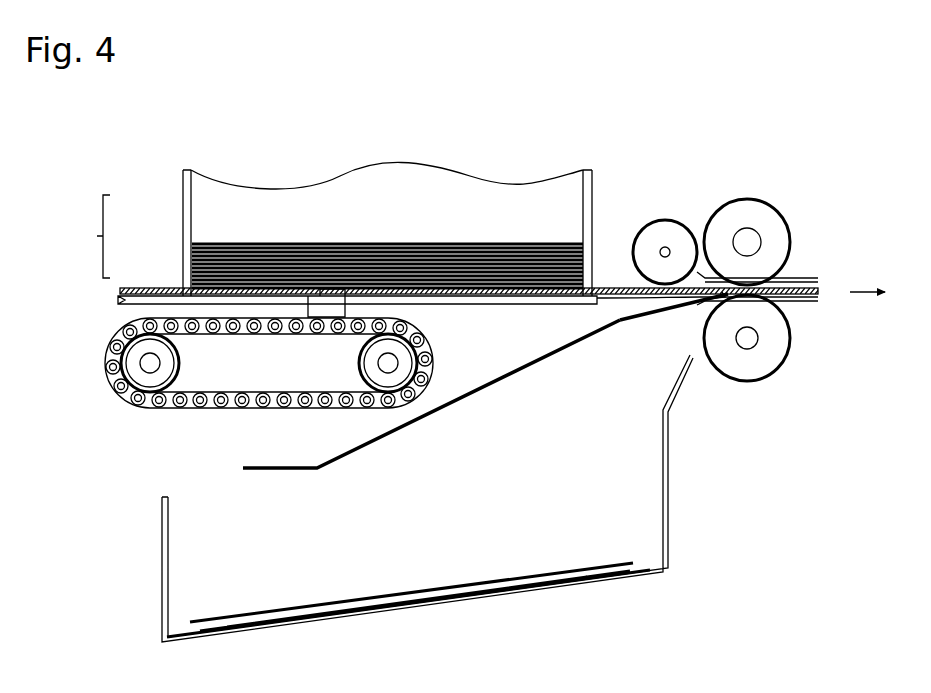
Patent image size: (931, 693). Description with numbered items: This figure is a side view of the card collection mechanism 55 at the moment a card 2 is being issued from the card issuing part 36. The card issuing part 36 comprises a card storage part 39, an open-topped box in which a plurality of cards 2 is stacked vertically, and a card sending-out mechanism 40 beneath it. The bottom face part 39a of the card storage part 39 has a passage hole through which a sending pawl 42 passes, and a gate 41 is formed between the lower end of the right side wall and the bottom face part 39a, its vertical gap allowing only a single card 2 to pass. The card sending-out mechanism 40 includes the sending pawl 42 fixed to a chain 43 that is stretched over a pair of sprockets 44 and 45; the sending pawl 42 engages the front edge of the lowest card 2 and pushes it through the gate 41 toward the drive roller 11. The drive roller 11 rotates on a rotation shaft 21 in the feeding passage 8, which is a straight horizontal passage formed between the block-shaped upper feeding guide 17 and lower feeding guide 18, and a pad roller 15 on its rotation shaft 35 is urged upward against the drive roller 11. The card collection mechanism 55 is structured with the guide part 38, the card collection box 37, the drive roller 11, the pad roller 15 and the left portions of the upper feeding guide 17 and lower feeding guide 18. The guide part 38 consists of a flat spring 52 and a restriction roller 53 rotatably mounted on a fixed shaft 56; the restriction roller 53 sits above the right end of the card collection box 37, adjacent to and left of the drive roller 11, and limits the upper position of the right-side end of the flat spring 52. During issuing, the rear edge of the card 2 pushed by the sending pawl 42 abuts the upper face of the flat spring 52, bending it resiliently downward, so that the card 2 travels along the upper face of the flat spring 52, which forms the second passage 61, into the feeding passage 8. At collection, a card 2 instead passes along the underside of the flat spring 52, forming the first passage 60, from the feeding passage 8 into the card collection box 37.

The card 2 is at (277, 243).
The feeding passage 8 is at (791, 282).
The drive roller 11 is at (769, 214).
The pad roller 15 is at (767, 363).
The upper feeding guide 17 is at (815, 278).
The lower feeding guide 18 is at (810, 302).
The rotation shaft 21 is at (755, 232).
The rotation shaft 35 is at (758, 340).
The card issuing part 36 is at (83, 236).
The card collection box 37 is at (668, 485).
The guide part 38 is at (485, 380).
The card storage part 39 is at (183, 218).
The bottom face part 39a is at (512, 304).
The card sending-out mechanism 40 is at (462, 246).
The gate 41 is at (592, 280).
The sending pawl 42 is at (345, 303).
The chain 43 is at (190, 408).
The sprocket 44 is at (190, 363).
The sprocket 45 is at (358, 363).
The flat spring 52 is at (588, 342).
The restriction roller 53 is at (627, 318).
The card collection mechanism 55 is at (697, 135).
The fixed shaft 56 is at (668, 250).
The first passage 60 is at (673, 322).
The second passage 61 is at (624, 268).